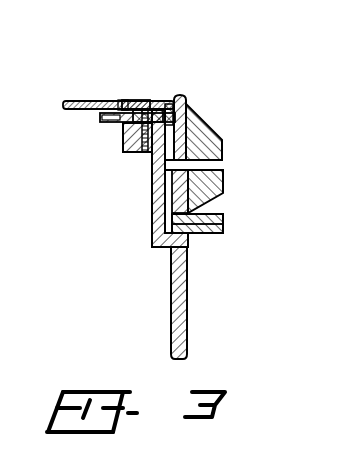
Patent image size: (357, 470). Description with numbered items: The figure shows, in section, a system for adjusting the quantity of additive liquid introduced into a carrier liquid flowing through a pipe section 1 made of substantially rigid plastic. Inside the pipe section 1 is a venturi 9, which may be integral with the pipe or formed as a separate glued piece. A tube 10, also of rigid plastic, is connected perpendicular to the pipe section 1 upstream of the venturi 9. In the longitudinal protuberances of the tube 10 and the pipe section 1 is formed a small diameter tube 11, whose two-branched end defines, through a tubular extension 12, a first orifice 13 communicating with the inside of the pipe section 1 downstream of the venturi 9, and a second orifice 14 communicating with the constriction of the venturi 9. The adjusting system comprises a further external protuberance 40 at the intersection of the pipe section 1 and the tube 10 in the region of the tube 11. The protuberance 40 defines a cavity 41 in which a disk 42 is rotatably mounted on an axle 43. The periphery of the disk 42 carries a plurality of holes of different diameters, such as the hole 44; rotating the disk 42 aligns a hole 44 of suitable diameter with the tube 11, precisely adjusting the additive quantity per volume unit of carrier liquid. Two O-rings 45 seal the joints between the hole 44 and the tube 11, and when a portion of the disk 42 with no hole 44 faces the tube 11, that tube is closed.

The pipe section 1 is at (186, 320).
The venturi 9 is at (207, 131).
The tube 10 is at (66, 110).
The small diameter tube 11 is at (152, 193).
The tubular extension 12 is at (214, 235).
The first orifice 13 is at (213, 224).
The second orifice 14 is at (208, 165).
The external protuberance 40 is at (129, 152).
The cavity 41 is at (129, 100).
The disk 42 is at (122, 102).
The axle 43 is at (151, 101).
The hole 44 is at (108, 121).
The O-rings 45 is at (177, 96).